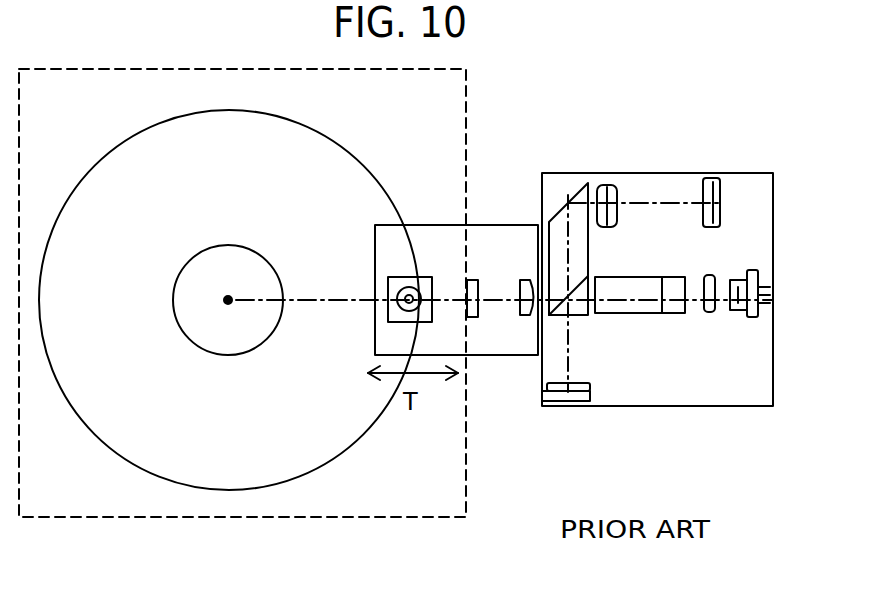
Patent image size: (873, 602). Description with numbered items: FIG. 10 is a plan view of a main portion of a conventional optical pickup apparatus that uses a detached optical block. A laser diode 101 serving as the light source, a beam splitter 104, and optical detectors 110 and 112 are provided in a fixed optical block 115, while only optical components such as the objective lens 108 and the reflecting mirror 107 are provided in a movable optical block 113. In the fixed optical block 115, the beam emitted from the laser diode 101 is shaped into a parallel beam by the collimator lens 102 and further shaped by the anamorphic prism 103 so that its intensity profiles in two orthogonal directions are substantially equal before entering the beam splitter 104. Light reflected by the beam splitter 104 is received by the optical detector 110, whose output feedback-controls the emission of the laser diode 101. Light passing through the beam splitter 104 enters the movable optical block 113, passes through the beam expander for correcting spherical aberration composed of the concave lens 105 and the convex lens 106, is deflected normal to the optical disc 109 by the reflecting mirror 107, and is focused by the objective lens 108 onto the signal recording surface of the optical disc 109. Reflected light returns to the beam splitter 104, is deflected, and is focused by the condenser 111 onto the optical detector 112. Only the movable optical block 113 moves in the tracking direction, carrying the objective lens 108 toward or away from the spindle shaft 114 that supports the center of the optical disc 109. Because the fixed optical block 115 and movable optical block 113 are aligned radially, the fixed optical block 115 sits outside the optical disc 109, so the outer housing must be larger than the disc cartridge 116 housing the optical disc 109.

The laser diode 101 is at (757, 276).
The collimator lens 102 is at (709, 313).
The anamorphic prism 103 is at (650, 316).
The beam splitter 104 is at (560, 215).
The concave lens 105 is at (522, 275).
The convex lens 106 is at (478, 275).
The reflecting mirror 107 is at (430, 278).
The objective lens 108 is at (410, 285).
The optical disc 109 is at (295, 157).
The optical detector 110 is at (583, 398).
The condenser 111 is at (610, 183).
The optical detector 112 is at (718, 178).
The movable optical block 113 is at (490, 357).
The spindle shaft 114 is at (229, 305).
The fixed optical block 115 is at (712, 385).
The disc cartridge 116 is at (95, 485).